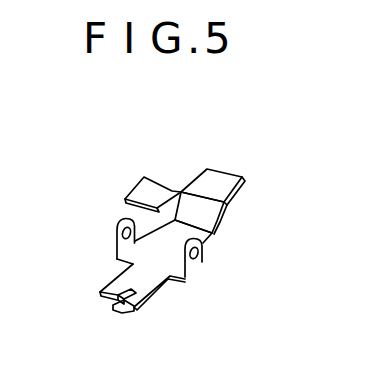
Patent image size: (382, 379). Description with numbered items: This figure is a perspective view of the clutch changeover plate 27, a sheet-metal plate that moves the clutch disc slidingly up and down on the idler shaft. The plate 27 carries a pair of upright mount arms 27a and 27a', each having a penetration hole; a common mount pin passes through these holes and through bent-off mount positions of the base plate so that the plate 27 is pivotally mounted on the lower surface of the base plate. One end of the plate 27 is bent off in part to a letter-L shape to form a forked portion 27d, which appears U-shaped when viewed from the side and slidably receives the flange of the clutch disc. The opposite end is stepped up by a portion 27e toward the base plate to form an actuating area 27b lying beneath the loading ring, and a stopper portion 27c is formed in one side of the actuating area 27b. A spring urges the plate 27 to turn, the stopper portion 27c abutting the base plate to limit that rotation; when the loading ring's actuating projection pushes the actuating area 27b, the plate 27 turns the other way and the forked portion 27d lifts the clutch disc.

The clutch changeover plate 27 is at (198, 318).
The mount arm 27a is at (95, 242).
The mount arm 27a' is at (233, 264).
The actuating area 27b is at (256, 153).
The stopper portion 27c is at (147, 190).
The forked portion 27d is at (95, 328).
The stepped portion 27e is at (257, 227).